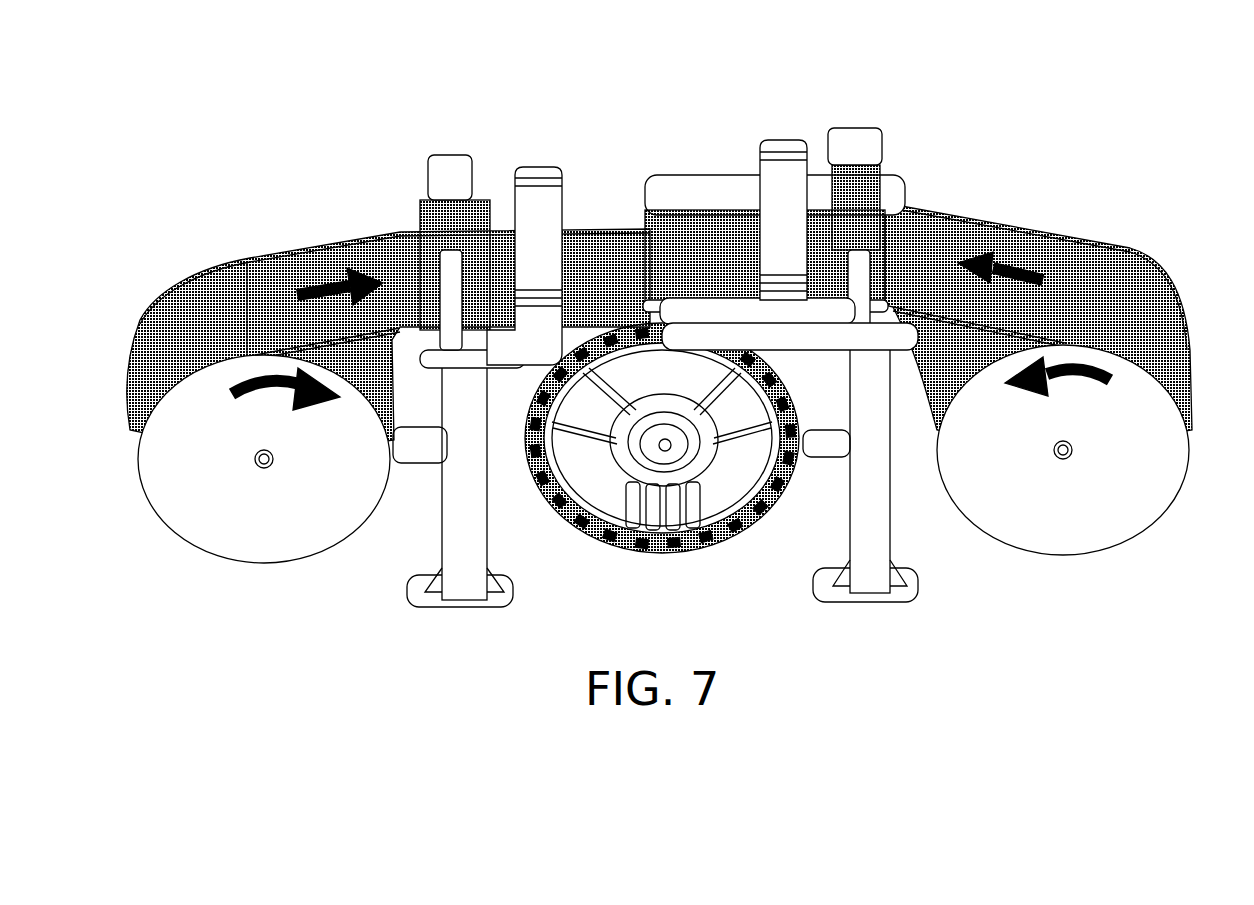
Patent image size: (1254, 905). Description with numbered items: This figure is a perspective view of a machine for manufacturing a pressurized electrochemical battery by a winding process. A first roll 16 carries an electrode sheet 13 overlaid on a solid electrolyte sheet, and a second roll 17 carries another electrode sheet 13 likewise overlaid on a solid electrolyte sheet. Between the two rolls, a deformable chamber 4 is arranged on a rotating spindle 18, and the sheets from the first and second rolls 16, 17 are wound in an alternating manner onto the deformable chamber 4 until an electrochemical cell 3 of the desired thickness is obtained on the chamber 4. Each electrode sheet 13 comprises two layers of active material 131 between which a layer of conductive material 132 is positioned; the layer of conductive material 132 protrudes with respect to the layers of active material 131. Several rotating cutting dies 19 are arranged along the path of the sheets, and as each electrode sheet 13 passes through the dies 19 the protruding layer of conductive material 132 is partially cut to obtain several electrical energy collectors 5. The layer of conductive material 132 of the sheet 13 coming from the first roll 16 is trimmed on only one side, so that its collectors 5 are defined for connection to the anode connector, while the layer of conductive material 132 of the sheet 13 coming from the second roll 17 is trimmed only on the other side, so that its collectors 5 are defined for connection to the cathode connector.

The electrochemical cell 3 is at (663, 560).
The deformable chamber 4 is at (727, 512).
The electrical energy collectors 5 is at (679, 325).
The electrode sheet 13 is at (180, 318).
The layers of active material 131 is at (218, 280).
The layer of conductive material 132 is at (312, 245).
The first roll 16 is at (207, 492).
The second roll 17 is at (1132, 483).
The rotating spindle 18 is at (640, 470).
The rotating cutting dies 19 is at (535, 242).